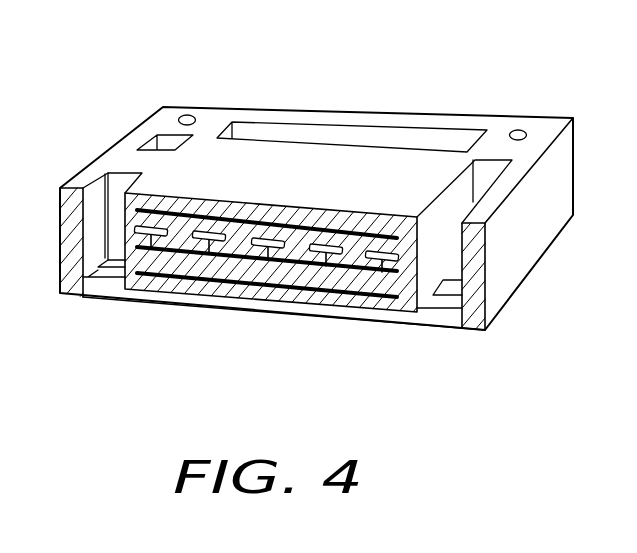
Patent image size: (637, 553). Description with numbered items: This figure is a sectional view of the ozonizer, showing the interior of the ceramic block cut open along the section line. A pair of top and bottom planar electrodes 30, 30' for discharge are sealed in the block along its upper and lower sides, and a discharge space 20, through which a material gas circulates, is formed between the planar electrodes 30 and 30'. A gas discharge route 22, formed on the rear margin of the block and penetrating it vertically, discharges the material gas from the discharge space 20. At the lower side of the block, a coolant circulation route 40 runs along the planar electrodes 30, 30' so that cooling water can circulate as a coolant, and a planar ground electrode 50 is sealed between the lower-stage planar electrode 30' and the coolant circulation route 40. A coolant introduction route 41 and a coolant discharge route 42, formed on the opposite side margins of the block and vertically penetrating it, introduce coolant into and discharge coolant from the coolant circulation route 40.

The discharge space 20 is at (268, 249).
The gas discharge route 22 is at (348, 137).
The planar electrode 30 is at (267, 191).
The planar electrode 30' is at (267, 307).
The coolant circulation route 40 is at (255, 305).
The coolant introduction route 41 is at (150, 142).
The coolant discharge route 42 is at (488, 167).
The planar ground electrode 50 is at (362, 310).